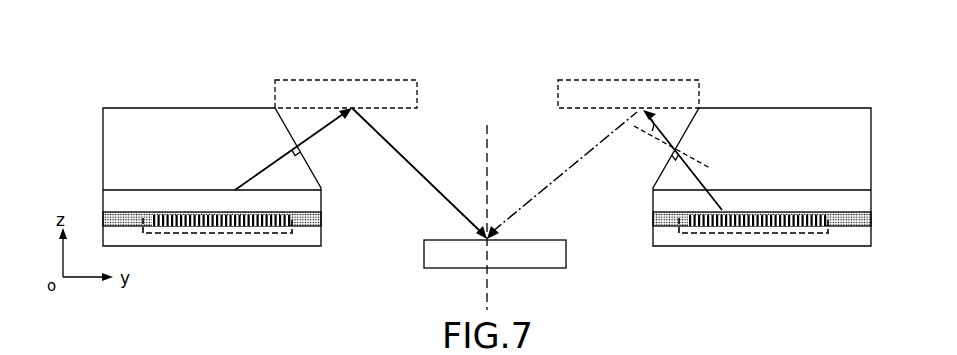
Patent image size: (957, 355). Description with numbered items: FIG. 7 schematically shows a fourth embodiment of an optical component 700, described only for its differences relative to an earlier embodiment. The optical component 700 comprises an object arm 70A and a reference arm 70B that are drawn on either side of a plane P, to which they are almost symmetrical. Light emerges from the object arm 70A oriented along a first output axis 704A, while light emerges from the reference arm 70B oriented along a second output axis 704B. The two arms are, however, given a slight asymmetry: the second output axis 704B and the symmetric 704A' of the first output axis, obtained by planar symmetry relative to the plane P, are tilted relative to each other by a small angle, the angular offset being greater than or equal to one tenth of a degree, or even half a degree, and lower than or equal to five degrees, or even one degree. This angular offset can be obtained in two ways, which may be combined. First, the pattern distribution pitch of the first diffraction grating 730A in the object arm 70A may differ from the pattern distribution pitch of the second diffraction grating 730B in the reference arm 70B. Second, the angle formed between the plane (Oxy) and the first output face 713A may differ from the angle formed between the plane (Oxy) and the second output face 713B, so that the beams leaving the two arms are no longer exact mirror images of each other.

The optical component 700 is at (92, 69).
The object arm 70A is at (145, 113).
The reference arm 70B is at (843, 113).
The first output face 713A is at (291, 124).
The second output face 713B is at (687, 116).
The first output axis 704A is at (361, 173).
The symmetric of the first output axis 704A' is at (598, 175).
The second output axis 704B is at (658, 114).
The first diffraction grating 730A is at (203, 235).
The second diffraction grating 730B is at (738, 235).
The plane of symmetry P is at (486, 140).